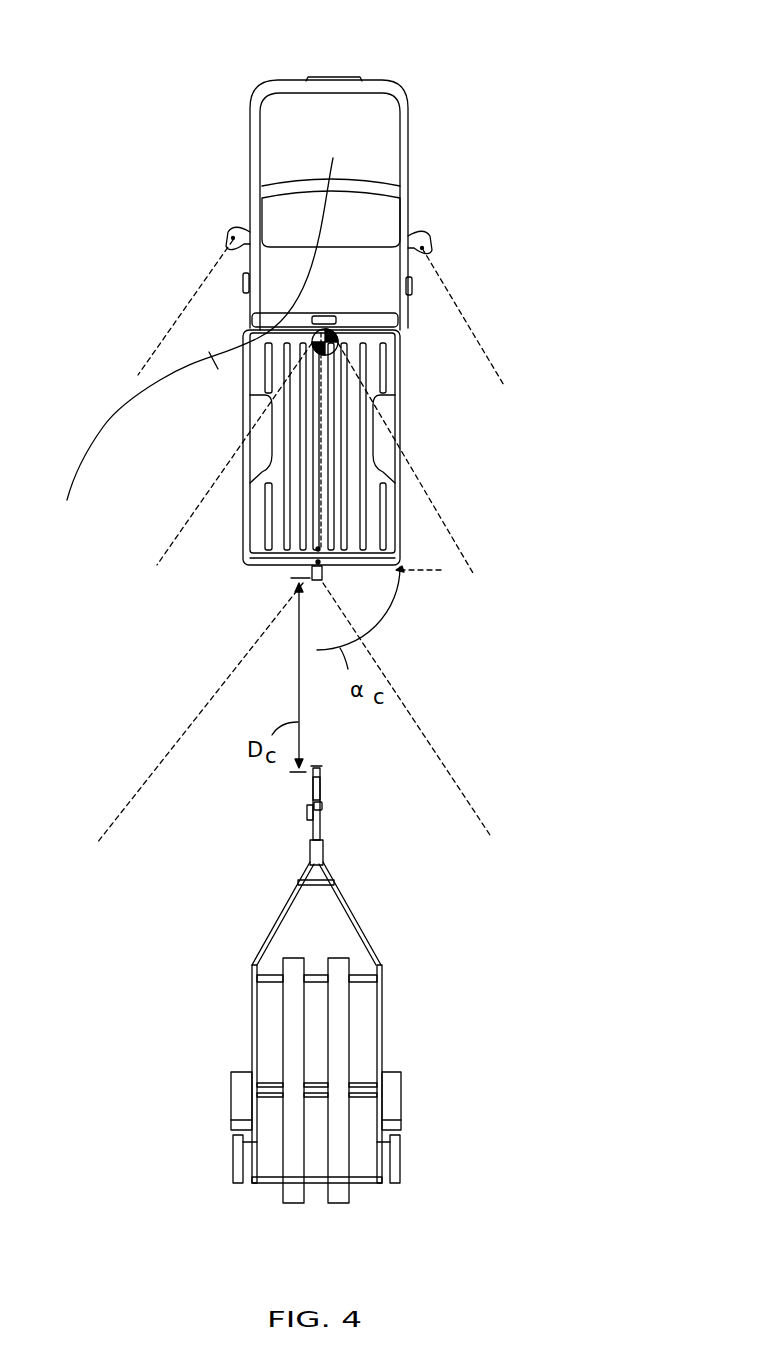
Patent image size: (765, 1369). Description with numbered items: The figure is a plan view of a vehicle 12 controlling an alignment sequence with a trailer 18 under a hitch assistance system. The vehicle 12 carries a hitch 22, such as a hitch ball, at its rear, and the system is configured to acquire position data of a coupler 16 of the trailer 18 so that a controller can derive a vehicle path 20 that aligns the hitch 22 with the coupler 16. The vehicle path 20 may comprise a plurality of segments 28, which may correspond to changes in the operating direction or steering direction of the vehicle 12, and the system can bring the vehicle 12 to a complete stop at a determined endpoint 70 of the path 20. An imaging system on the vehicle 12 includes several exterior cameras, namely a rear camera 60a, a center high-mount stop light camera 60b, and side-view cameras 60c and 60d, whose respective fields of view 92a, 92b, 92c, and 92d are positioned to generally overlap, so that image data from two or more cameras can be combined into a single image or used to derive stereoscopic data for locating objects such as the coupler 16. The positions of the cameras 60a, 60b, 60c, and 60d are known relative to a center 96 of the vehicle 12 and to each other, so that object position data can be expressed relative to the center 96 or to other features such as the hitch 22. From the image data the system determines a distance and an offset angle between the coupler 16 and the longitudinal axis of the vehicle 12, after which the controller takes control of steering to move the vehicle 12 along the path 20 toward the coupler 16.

The vehicle 12 is at (413, 42).
The coupler 16 is at (322, 773).
The trailer 18 is at (300, 984).
The vehicle path 20 is at (328, 465).
The hitch 22 is at (311, 571).
The segments 28 is at (290, 298).
The rear camera 60a is at (322, 558).
The center high-mount stop light (CHMSL) camera 60b is at (316, 336).
The side-view camera 60c is at (422, 250).
The side-view camera 60d is at (233, 238).
The endpoint 70 is at (316, 549).
The field of view 92a is at (211, 694).
The field of view 92b is at (163, 550).
The field of view 92c is at (487, 343).
The field of view 92d is at (153, 354).
The center 96 is at (340, 336).